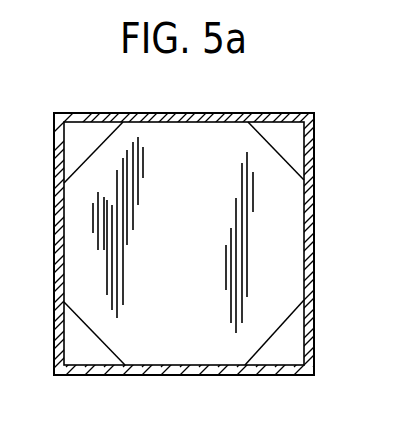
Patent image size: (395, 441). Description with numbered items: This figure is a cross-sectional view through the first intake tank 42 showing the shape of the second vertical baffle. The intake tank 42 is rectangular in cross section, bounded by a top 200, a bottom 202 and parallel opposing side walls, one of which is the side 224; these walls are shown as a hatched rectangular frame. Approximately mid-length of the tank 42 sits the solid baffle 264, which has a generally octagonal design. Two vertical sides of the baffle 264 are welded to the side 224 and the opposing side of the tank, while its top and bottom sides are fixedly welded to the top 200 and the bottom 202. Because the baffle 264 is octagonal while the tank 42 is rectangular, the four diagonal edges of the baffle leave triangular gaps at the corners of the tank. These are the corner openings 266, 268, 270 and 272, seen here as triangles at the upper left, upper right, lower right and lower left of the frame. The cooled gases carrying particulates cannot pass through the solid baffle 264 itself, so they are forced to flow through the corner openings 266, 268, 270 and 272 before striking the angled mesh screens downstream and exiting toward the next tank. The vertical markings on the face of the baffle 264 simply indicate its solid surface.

The first intake tank 42 is at (280, 100).
The top 200 is at (175, 113).
The bottom 202 is at (200, 377).
The side 224 is at (54, 264).
The solid baffle 264 is at (175, 273).
The corner opening 266 is at (80, 133).
The corner opening 268 is at (295, 145).
The corner opening 270 is at (293, 353).
The corner opening 272 is at (90, 353).